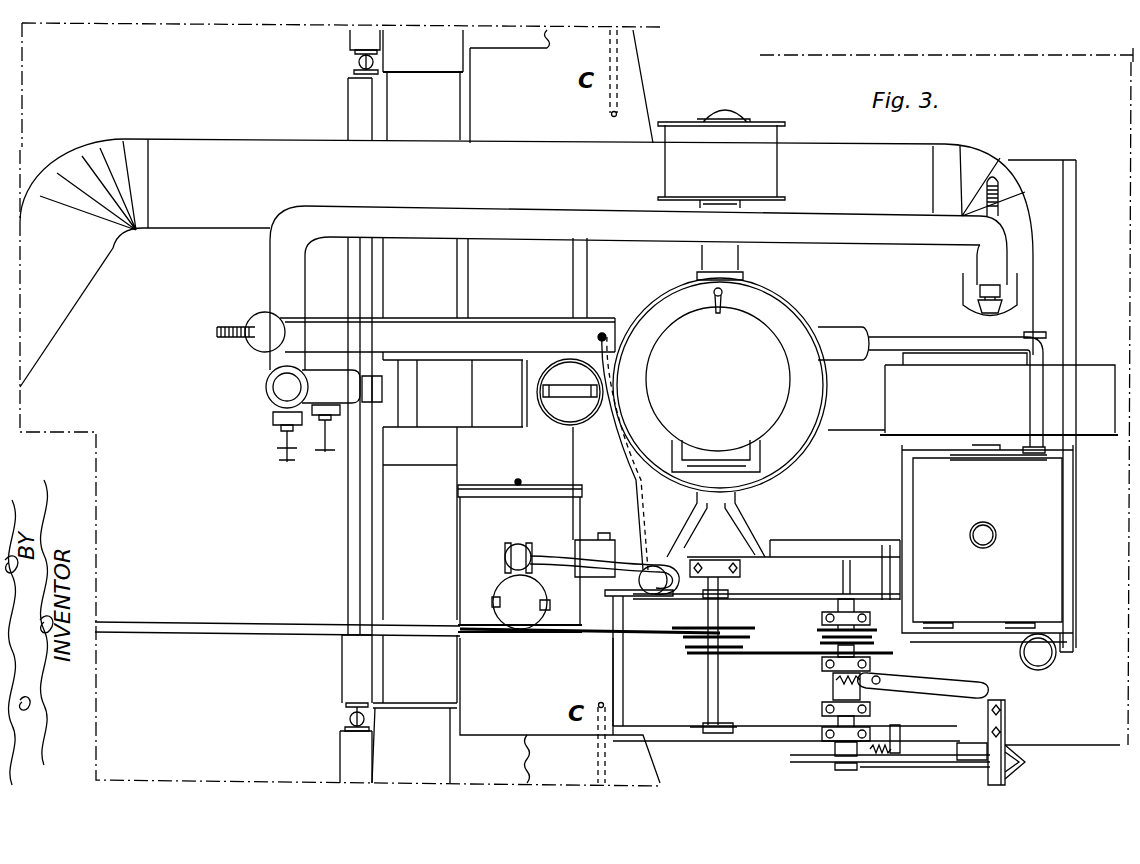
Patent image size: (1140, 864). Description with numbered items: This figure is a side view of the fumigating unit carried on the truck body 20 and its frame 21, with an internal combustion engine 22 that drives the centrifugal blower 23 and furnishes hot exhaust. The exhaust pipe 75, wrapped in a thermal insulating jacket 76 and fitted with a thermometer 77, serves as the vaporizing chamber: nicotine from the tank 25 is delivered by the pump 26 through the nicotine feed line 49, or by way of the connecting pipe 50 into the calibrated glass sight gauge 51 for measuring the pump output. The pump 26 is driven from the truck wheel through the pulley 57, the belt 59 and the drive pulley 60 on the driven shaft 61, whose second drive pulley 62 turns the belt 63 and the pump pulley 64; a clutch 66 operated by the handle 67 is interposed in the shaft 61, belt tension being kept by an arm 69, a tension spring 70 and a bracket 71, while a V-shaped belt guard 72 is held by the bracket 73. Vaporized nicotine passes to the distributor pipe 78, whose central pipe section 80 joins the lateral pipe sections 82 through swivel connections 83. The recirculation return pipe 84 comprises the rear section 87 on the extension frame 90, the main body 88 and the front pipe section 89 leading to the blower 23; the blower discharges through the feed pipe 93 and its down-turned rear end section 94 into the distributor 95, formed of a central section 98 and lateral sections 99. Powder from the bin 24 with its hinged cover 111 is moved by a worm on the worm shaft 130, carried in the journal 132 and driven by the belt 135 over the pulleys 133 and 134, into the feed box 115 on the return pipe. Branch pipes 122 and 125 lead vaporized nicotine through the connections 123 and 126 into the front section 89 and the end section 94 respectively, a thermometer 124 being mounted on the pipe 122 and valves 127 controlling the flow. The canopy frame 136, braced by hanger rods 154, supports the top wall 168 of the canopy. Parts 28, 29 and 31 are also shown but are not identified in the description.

The truck body 20 is at (1077, 730).
The frame 21 is at (378, 568).
The internal combustion engine 22 is at (1025, 545).
The centrifugal blower 23 is at (1058, 408).
The bin 24 is at (788, 435).
The tank 25 is at (487, 567).
The pump 26 is at (652, 566).
The roller 28 is at (520, 605).
The bar 29 is at (518, 482).
The switch box 31 is at (593, 563).
The nicotine feed line 49 is at (638, 502).
The connecting pipe 50 is at (600, 577).
The calibrated glass sight gauge 51 is at (515, 553).
The pulley 57 is at (960, 767).
The belt 59 is at (933, 765).
The drive pulley 60 is at (807, 762).
The driven shaft 61 is at (845, 767).
The drive pulley 62 is at (808, 595).
The belt 63 is at (763, 594).
The pump pulley 64 is at (640, 598).
The clutch 66 is at (840, 692).
The handle 67 is at (930, 682).
The arm 69 is at (842, 750).
The tension spring 70 is at (882, 750).
The bracket 71 is at (898, 728).
The V-shaped belt guard 72 is at (1020, 767).
The bracket 73 is at (1000, 728).
The exhaust pipe 75 is at (920, 337).
The thermal insulating jacket 76 is at (855, 335).
The thermometer 77 is at (217, 332).
The distributor pipe 78 is at (358, 670).
The central pipe section 80 is at (350, 596).
The lateral pipe sections 82 is at (355, 762).
The swivel connections 83 is at (350, 718).
The return pipe 84 is at (548, 167).
The rear section 87 is at (47, 300).
The main body 88 is at (315, 162).
The front pipe section 89 is at (962, 300).
The extension frame 90 is at (195, 625).
The feed pipe 93 is at (495, 415).
The rear end section 94 is at (425, 403).
The distributor 95 is at (400, 525).
The central section 98 is at (423, 657).
The lateral sections 99 is at (423, 750).
The hinged cover 111 is at (757, 428).
The feed box 115 is at (748, 150).
The branch pipe 122 is at (578, 215).
The connection 123 is at (988, 305).
The thermometer 124 is at (992, 192).
The branch pipe 125 is at (333, 385).
The connection 126 is at (377, 382).
The valves 127 is at (322, 450).
The worm shaft 130 is at (715, 580).
The journal 132 is at (717, 735).
The pulleys 133 is at (752, 635).
The pulleys 134 is at (872, 643).
The belt 135 is at (778, 652).
The rectangular frame 136 is at (600, 760).
The hanger rods 154 is at (648, 743).
The top wall 168 is at (558, 757).